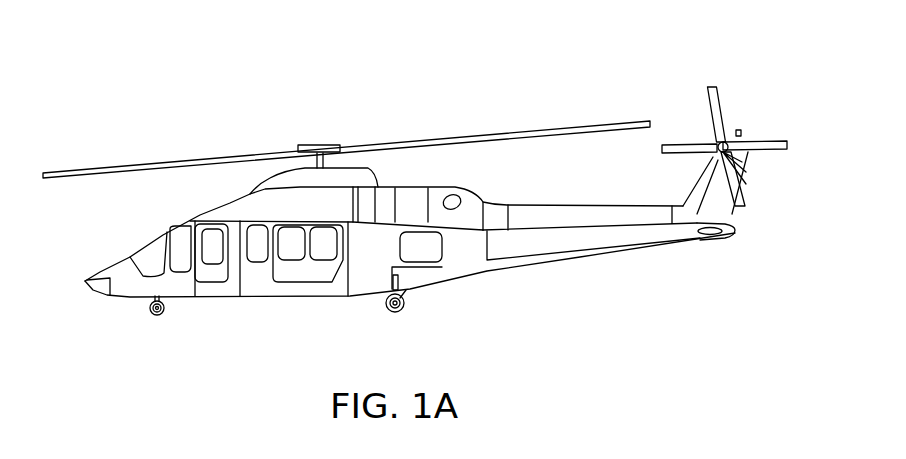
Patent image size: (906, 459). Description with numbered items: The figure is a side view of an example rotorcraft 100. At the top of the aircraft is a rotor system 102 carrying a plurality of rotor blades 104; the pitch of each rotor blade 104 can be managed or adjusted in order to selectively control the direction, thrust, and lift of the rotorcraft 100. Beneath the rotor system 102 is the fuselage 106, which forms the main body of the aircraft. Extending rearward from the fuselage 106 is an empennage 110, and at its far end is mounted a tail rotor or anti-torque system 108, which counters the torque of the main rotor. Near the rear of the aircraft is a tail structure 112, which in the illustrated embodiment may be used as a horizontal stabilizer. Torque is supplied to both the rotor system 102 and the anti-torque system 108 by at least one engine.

The rotorcraft 100 is at (182, 52).
The rotor system 102 is at (331, 130).
The rotor blades 104 is at (170, 163).
The fuselage 106 is at (258, 297).
The tail rotor or anti-torque system 108 is at (743, 122).
The empennage 110 is at (607, 258).
The tail structure 112 is at (713, 240).